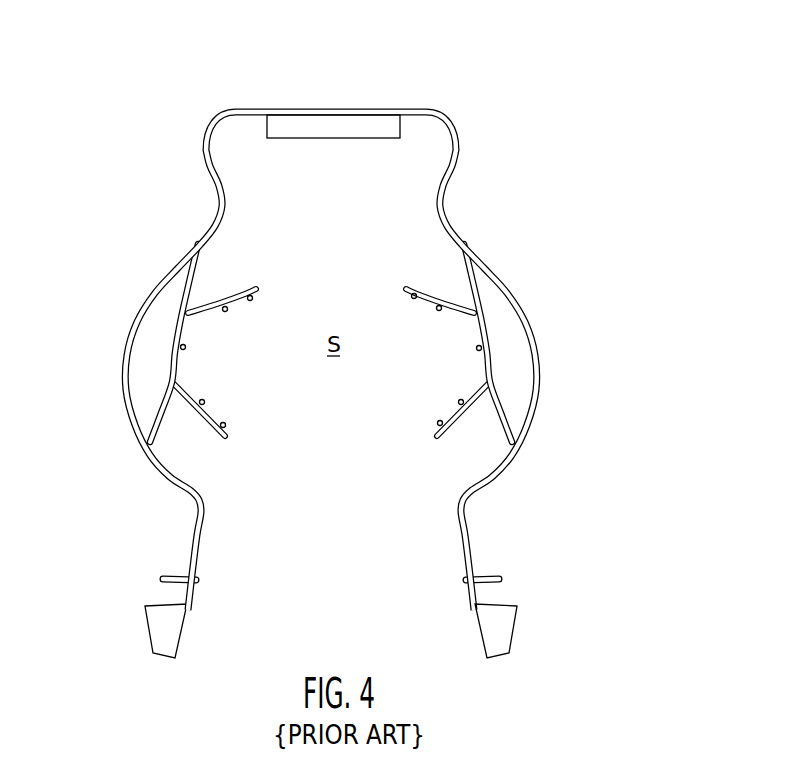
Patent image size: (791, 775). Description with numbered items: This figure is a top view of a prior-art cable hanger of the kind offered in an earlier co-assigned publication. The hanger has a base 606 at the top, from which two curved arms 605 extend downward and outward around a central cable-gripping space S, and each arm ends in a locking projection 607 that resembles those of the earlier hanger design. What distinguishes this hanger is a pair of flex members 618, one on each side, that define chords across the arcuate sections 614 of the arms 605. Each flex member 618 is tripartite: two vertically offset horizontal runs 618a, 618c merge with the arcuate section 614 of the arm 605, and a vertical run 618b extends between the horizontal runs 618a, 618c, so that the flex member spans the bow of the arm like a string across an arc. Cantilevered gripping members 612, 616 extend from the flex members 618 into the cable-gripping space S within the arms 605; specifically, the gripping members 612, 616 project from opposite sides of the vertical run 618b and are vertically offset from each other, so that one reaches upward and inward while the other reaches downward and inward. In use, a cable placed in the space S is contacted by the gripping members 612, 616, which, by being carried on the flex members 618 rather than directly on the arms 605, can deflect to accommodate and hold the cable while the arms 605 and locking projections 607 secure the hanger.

The curved arms 605 is at (459, 227).
The base 606 is at (418, 110).
The locking projections 607 is at (505, 632).
The cantilevered gripping member 612 is at (428, 290).
The arcuate sections 614 is at (398, 368).
The cantilevered gripping member 616 is at (450, 430).
The flex members 618 is at (508, 327).
The horizontal run 618a is at (478, 284).
The vertical run 618b is at (490, 358).
The horizontal run 618c is at (503, 410).